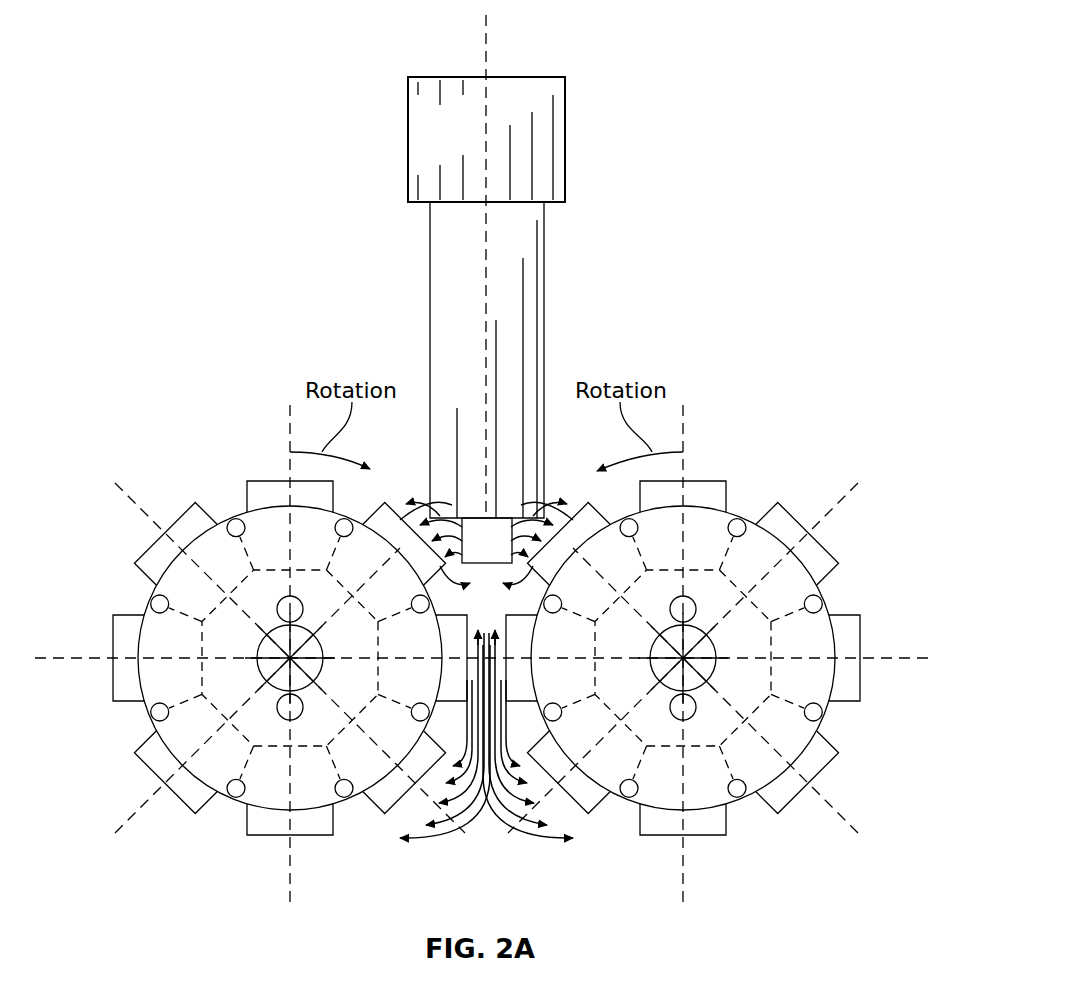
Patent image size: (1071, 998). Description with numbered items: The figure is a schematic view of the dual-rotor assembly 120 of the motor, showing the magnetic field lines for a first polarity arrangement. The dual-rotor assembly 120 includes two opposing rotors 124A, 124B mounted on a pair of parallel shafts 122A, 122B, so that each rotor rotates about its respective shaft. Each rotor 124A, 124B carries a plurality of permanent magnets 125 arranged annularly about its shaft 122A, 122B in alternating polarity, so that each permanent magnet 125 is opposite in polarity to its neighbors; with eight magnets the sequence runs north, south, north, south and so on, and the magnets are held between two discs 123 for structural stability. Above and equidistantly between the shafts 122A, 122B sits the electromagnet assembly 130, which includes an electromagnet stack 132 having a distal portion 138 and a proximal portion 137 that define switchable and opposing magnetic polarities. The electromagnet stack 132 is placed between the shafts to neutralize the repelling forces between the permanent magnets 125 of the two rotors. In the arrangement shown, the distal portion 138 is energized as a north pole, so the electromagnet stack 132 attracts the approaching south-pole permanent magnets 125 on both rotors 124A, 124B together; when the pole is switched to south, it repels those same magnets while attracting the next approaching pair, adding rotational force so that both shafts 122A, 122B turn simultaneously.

The dual-rotor assembly 120 is at (147, 377).
The parallel shaft 122A is at (285, 652).
The parallel shaft 122B is at (688, 652).
The discs 123 is at (151, 715).
The rotor 124A is at (182, 477).
The rotor 124B is at (766, 488).
The permanent magnet 125 is at (486, 659).
The electromagnet assembly 130 is at (647, 44).
The electromagnet stack 132 is at (512, 316).
The proximal portion 137 is at (455, 220).
The distal portion 138 is at (460, 499).